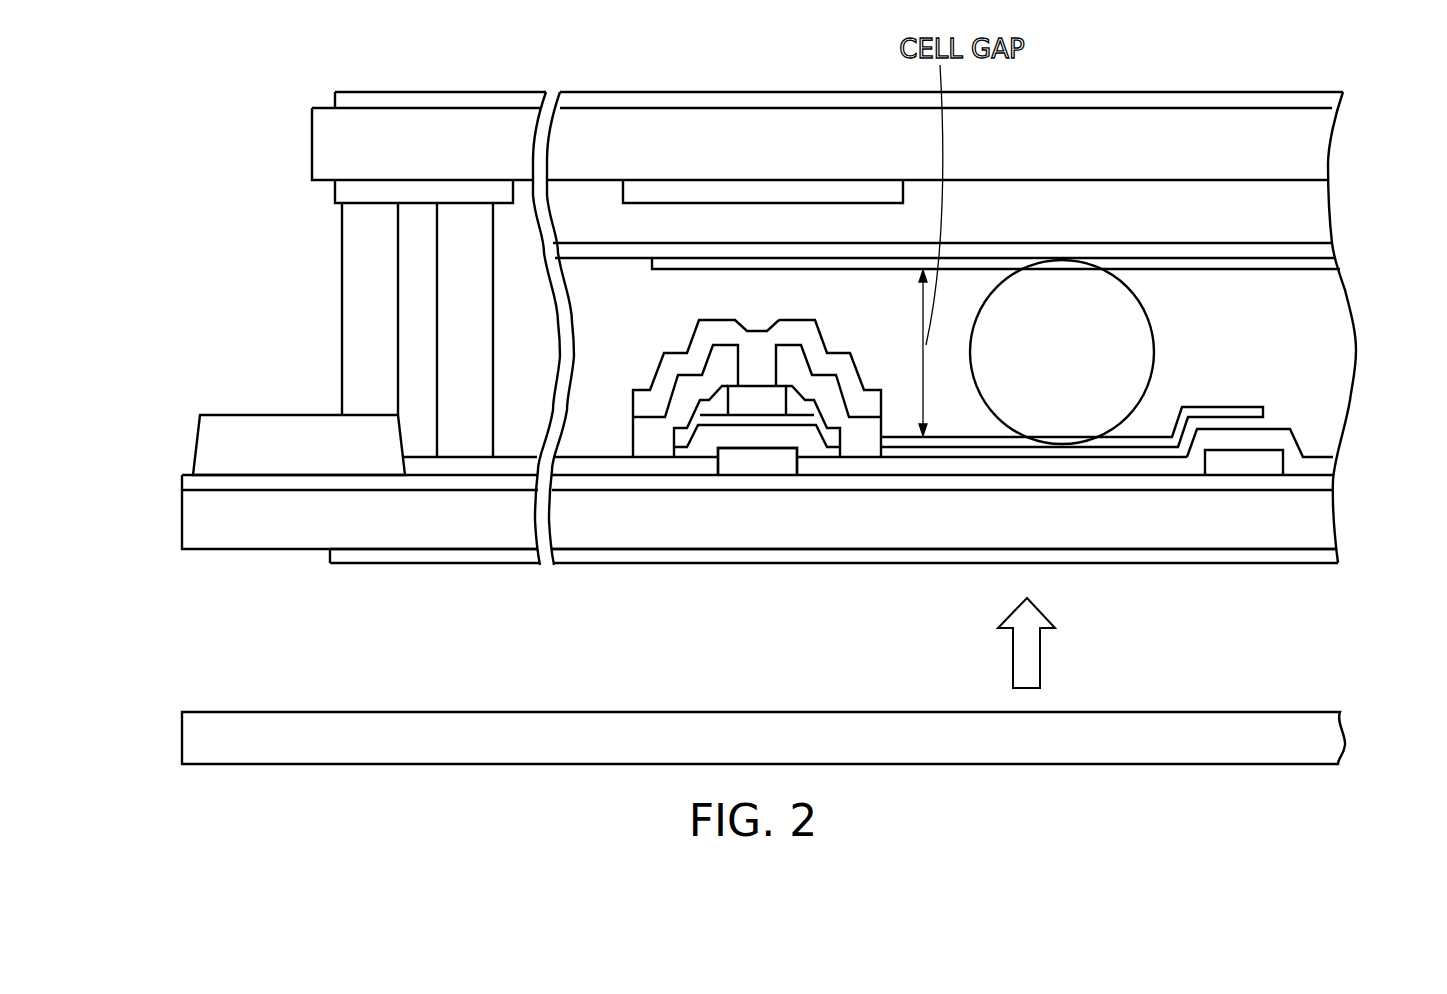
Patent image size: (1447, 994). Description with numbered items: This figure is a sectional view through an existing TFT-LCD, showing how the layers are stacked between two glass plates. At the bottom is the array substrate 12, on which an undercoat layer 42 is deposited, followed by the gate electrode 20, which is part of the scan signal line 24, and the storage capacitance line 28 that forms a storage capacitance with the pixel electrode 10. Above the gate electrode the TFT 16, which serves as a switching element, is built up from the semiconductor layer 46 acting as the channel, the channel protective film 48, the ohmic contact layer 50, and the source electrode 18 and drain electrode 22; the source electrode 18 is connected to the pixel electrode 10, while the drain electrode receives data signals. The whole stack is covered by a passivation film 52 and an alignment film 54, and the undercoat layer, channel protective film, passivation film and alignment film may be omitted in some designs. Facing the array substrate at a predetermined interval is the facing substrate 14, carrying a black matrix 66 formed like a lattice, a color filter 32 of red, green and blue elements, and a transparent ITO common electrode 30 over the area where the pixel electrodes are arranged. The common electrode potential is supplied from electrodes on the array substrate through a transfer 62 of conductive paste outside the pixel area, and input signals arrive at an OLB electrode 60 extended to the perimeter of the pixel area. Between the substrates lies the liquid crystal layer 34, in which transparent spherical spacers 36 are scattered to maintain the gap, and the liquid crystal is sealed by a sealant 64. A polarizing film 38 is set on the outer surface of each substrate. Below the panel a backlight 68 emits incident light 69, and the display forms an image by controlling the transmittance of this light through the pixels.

The pixel electrode 10 is at (1252, 422).
The array substrate 12 is at (290, 537).
The facing substrate 14 is at (401, 157).
The TFT 16 is at (723, 663).
The source electrode 18 is at (792, 350).
The gate electrode 20 is at (775, 467).
The drain electrode 22 is at (655, 452).
The scan signal line 24 is at (760, 554).
The storage capacitance line 28 is at (1267, 465).
The common electrode 30 is at (345, 190).
The color filter 32 is at (1173, 229).
The liquid crystal layer 34 is at (1229, 345).
The spherical spacer 36 is at (1045, 369).
The polarizing film 38 is at (1330, 102).
The undercoat layer 42 is at (188, 483).
The semiconductor layer 46 is at (830, 452).
The channel protective film 48 is at (736, 405).
The ohmic contact layer 50 is at (808, 405).
The passivation film 52 is at (678, 362).
The alignment film 54 is at (1338, 264).
The OLB electrode 60 is at (275, 462).
The transfer 62 is at (354, 330).
The sealant 64 is at (448, 330).
The black matrix 66 is at (733, 190).
The backlight 68 is at (1118, 755).
The incident light 69 is at (1020, 657).